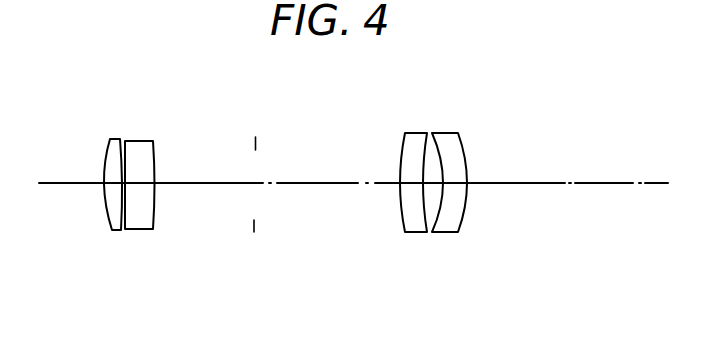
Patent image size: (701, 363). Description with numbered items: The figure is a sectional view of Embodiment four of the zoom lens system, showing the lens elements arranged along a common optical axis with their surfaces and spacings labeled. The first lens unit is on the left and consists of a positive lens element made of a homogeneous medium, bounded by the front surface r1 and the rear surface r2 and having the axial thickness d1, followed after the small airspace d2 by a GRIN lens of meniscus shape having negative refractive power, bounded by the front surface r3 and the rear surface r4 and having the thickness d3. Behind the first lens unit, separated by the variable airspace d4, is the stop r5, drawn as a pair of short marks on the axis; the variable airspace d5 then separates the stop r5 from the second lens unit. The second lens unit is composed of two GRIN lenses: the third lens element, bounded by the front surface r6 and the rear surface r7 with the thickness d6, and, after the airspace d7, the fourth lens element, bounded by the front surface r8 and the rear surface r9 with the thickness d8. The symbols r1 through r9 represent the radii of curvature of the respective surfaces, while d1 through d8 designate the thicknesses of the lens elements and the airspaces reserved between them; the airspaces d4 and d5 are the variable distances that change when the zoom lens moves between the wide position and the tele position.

The thickness of first lens element d1 is at (113, 180).
The airspace between first and second lens elements d2 is at (126, 180).
The thickness of second lens element d3 is at (152, 180).
The airspace between first lens unit and stop d4 is at (235, 183).
The airspace between stop and second lens unit d5 is at (318, 183).
The thickness of third lens element d6 is at (408, 182).
The airspace between third and fourth lens elements d7 is at (427, 133).
The thickness of fourth lens element d8 is at (462, 182).
The front surface of first lens element r1 is at (107, 210).
The rear surface of first lens element r2 is at (122, 214).
The front surface of second lens element r3 is at (126, 214).
The rear surface of second lens element r4 is at (155, 210).
The stop r5 is at (254, 223).
The front surface of third lens element r6 is at (402, 218).
The rear surface of third lens element r7 is at (427, 218).
The front surface of fourth lens element r8 is at (437, 218).
The rear surface of fourth lens element r9 is at (465, 218).